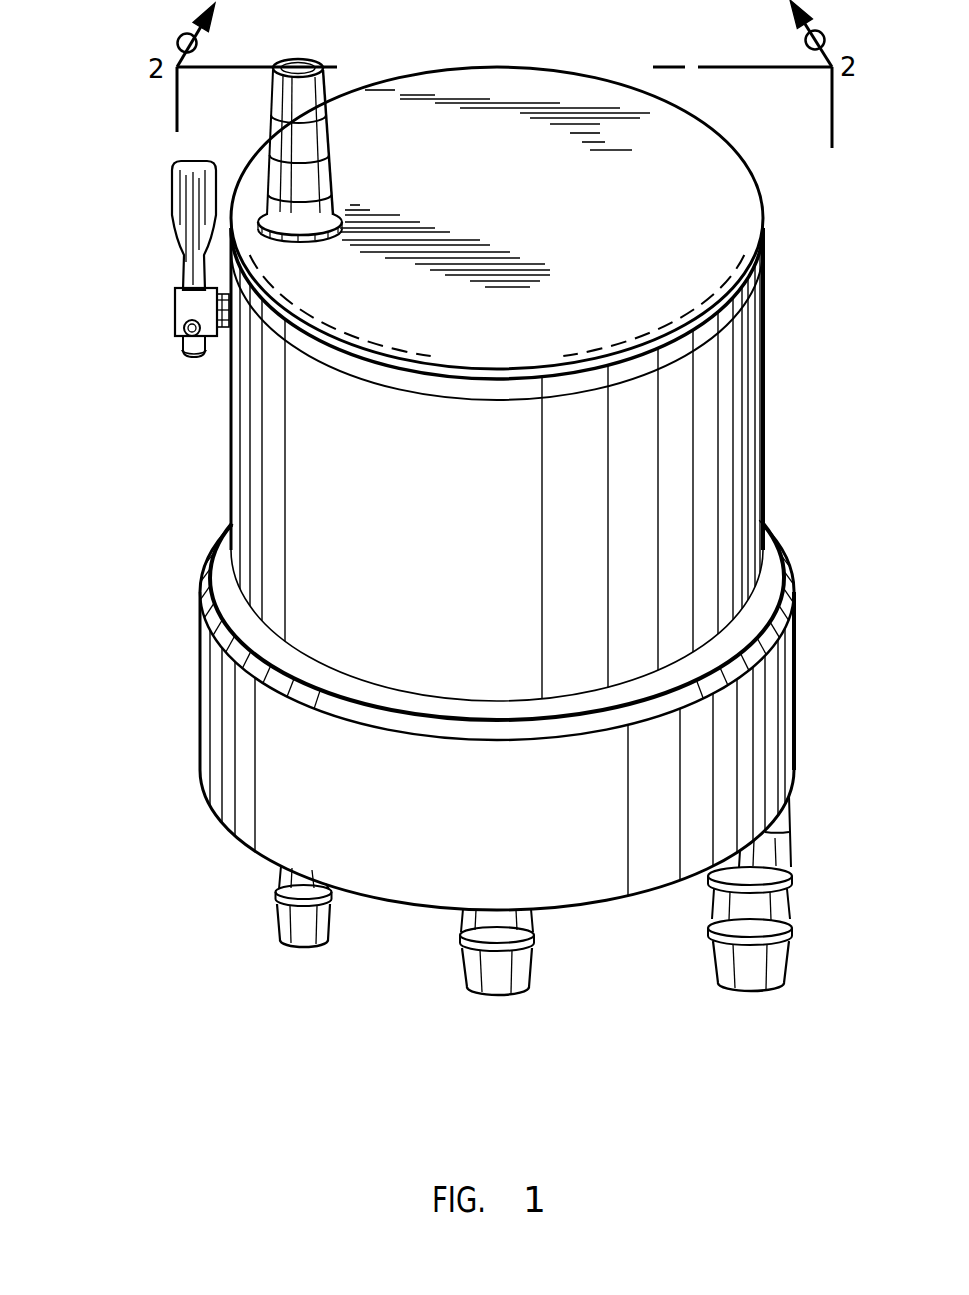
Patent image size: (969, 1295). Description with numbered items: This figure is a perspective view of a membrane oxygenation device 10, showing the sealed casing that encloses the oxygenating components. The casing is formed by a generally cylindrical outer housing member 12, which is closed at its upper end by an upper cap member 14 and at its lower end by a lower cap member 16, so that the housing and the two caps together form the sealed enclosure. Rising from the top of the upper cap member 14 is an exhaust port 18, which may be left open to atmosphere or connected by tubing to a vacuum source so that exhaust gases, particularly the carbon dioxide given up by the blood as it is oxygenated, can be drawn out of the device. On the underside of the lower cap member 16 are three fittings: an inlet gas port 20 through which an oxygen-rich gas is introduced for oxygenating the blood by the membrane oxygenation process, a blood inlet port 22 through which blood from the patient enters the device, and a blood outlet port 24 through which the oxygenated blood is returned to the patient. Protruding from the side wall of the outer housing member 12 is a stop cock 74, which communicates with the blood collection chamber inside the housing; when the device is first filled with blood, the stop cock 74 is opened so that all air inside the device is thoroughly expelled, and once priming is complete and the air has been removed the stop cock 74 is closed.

The membrane oxygenation device 10 is at (182, 442).
The cylindrical outer housing member 12 is at (720, 415).
The upper cap member 14 is at (678, 175).
The lower cap member 16 is at (745, 737).
The exhaust port 18 is at (313, 95).
The inlet gas port 20 is at (300, 930).
The blood inlet port 22 is at (497, 976).
The blood outlet port 24 is at (777, 973).
The stop cock 74 is at (190, 202).